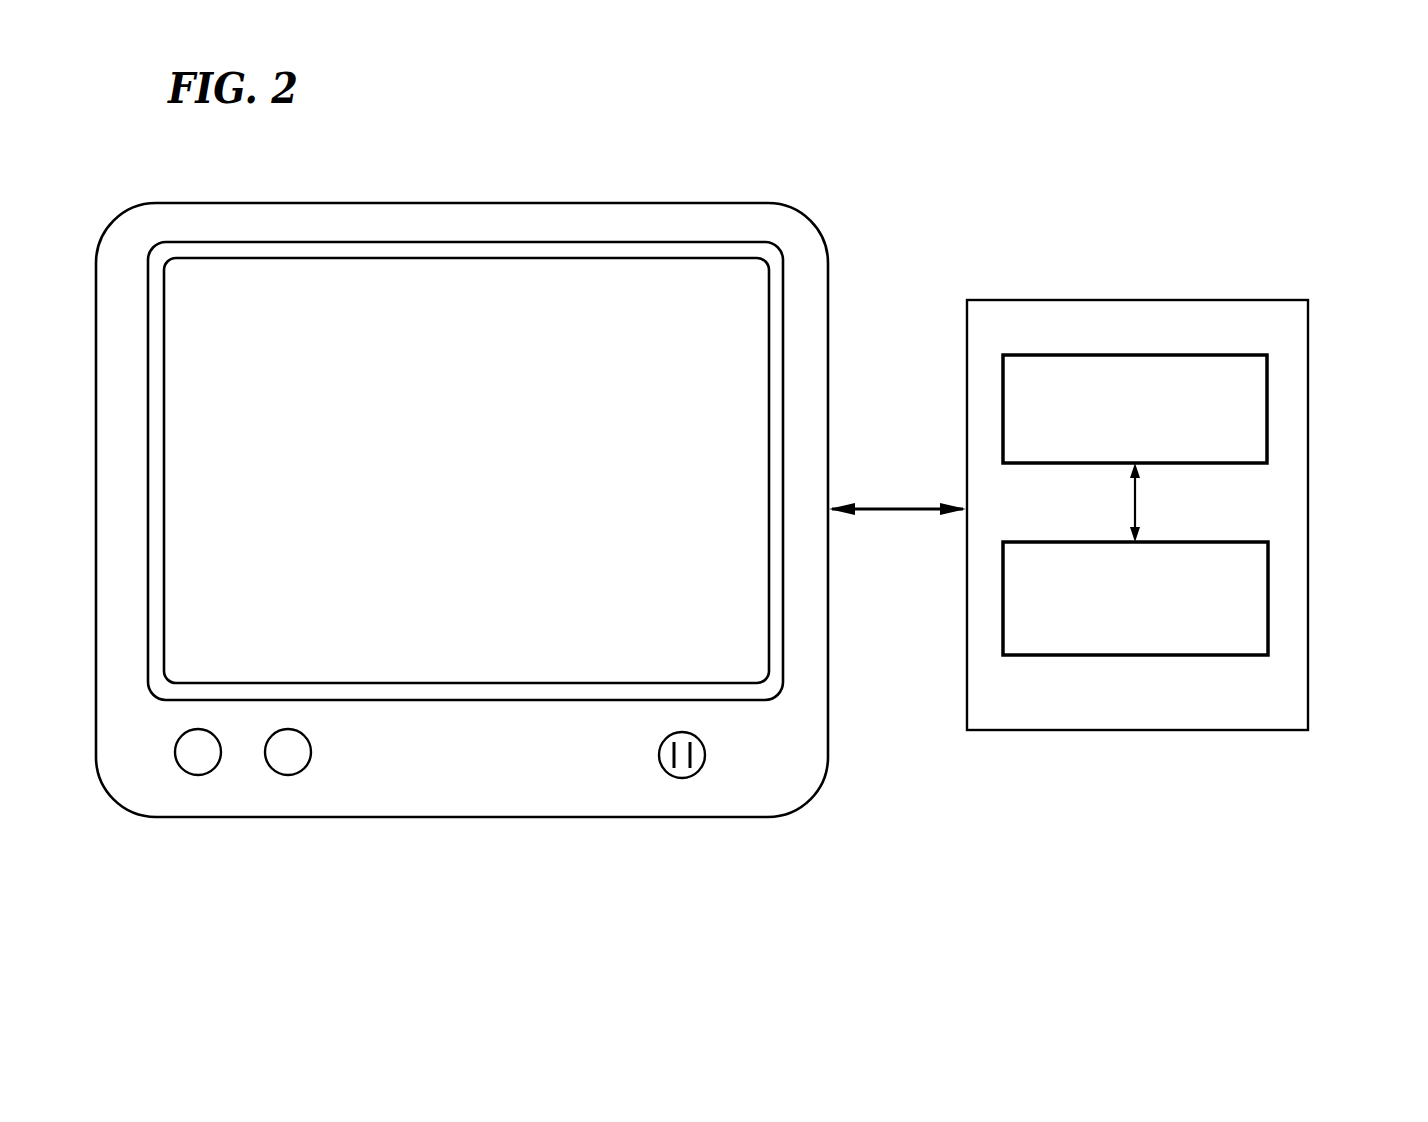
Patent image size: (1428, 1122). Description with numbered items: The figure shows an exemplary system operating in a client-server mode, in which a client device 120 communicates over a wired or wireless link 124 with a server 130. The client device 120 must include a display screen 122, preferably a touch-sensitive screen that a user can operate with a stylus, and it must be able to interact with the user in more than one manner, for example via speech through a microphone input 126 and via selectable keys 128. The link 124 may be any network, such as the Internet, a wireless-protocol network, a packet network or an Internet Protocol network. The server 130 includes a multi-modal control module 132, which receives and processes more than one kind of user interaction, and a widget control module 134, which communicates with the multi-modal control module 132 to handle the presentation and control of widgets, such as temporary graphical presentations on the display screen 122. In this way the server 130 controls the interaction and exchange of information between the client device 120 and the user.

The client device 120 is at (665, 212).
The display screen 122 is at (418, 280).
The wired or wireless link 124 is at (905, 505).
The microphone input 126 is at (688, 778).
The selectable keys 128 is at (278, 768).
The server 130 is at (1085, 305).
The multi-modal control module 132 is at (1245, 393).
The widget control module 134 is at (1265, 592).